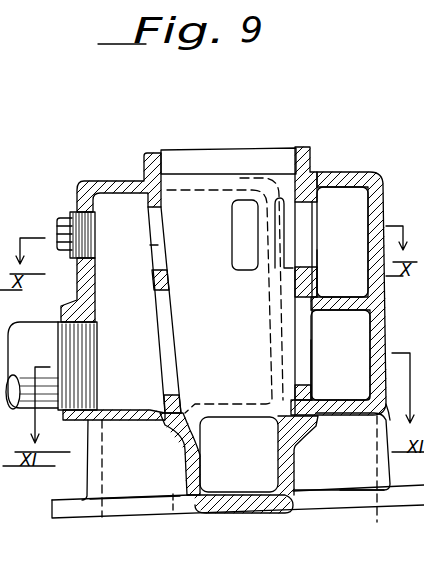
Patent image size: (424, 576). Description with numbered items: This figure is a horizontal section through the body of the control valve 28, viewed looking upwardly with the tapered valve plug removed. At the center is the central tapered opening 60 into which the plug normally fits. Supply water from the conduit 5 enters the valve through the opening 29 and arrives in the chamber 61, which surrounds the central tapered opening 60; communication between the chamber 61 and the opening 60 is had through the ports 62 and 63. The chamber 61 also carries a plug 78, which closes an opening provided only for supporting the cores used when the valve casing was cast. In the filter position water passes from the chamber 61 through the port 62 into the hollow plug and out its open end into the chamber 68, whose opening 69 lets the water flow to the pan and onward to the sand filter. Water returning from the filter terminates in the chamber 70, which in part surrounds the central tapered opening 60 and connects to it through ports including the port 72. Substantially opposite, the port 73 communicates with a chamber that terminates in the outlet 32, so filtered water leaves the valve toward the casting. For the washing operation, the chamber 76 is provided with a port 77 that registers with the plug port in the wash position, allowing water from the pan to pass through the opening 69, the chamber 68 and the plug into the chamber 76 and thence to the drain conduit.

The conduit 5 is at (32, 365).
The control valve 28 is at (313, 510).
The opening 29 is at (88, 396).
The outlet 32 is at (127, 506).
The central tapered opening 60 is at (187, 188).
The chamber 61 is at (189, 332).
The port 62 is at (172, 350).
The port 63 is at (163, 228).
The chamber 68 is at (252, 464).
The opening 69 is at (360, 502).
The chamber 70 is at (338, 293).
The port 72 is at (303, 263).
The port 73 is at (247, 200).
The chamber 76 is at (340, 355).
The port 77 is at (303, 369).
The plug 78 is at (62, 225).